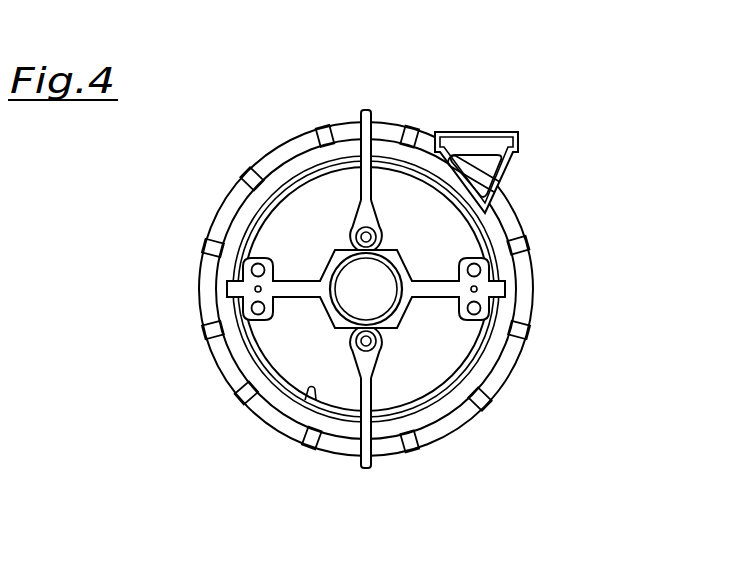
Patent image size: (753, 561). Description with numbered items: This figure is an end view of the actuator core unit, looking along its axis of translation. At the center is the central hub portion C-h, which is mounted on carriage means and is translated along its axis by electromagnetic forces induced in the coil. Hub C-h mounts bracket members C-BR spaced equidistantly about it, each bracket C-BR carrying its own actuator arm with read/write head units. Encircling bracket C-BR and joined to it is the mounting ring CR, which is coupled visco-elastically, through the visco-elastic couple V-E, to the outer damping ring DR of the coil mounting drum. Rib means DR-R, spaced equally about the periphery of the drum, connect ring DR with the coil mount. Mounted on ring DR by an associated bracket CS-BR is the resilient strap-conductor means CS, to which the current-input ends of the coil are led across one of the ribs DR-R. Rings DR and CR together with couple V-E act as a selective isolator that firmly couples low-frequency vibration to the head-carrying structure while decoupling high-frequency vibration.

The bracket member C-BR is at (366, 108).
The resilient strap-conductor means CS is at (510, 131).
The bracket CS-BR is at (515, 181).
The rib means DR-R is at (247, 173).
The damping ring DR is at (224, 353).
The visco-elastic couple V-E is at (240, 381).
The mounting ring CR is at (294, 422).
The central hub portion C-h is at (394, 317).